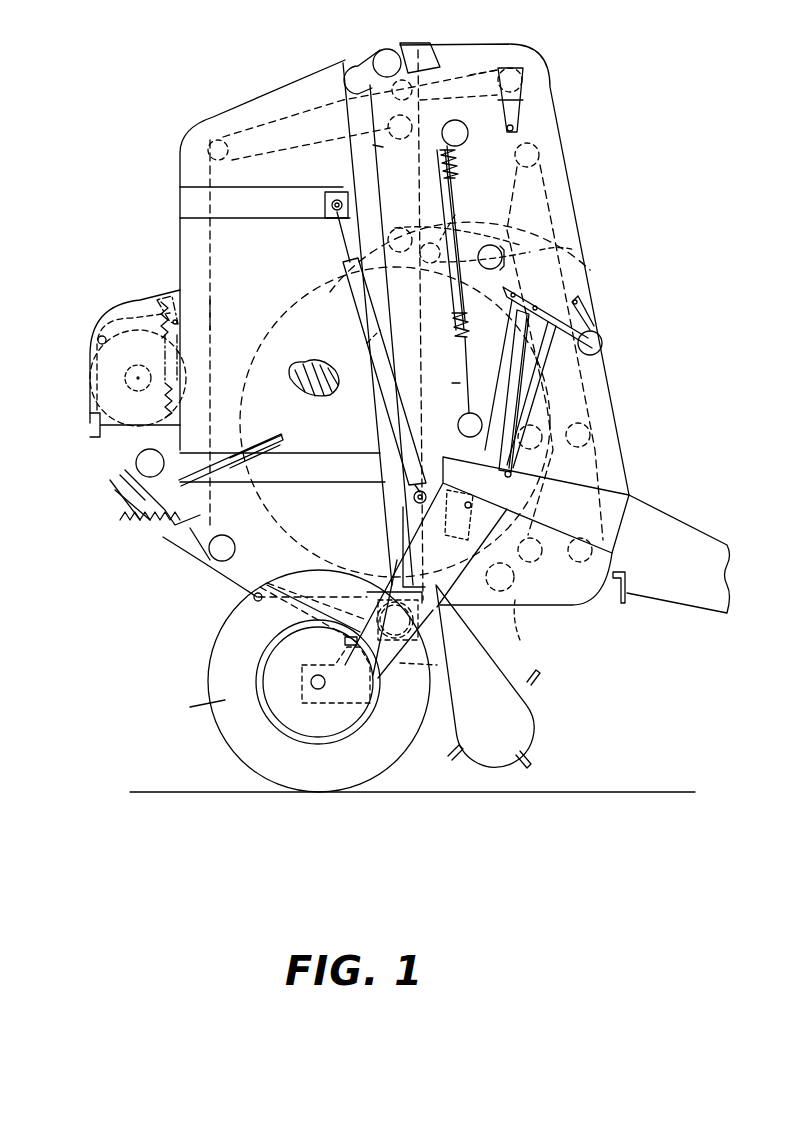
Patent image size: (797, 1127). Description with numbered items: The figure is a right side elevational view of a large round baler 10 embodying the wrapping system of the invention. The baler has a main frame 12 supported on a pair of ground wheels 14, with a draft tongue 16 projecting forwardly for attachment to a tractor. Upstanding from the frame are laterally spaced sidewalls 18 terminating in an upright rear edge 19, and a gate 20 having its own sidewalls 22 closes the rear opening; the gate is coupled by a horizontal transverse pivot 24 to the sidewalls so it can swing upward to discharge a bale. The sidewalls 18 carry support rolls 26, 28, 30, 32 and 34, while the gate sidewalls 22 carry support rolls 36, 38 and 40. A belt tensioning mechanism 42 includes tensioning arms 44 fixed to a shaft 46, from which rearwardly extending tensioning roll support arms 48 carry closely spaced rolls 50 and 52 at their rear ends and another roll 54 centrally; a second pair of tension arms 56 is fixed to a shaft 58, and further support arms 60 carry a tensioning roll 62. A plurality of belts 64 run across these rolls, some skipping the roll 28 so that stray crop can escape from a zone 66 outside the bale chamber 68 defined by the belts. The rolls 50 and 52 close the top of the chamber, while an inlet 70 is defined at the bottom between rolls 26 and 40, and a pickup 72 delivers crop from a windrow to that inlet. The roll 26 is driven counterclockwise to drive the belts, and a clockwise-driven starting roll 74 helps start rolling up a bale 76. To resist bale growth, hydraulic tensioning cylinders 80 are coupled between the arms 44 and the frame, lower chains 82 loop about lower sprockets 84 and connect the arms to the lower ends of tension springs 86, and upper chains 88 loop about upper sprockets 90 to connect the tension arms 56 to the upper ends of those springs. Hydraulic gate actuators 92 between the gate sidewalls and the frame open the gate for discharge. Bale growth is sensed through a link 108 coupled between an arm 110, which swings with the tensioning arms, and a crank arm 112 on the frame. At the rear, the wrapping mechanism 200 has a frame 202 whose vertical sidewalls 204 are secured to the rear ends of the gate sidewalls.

The large round baler 10 is at (591, 641).
The main frame 12 is at (662, 492).
The ground wheels 14 is at (200, 708).
The draft tongue 16 is at (695, 573).
The sidewalls 18 is at (537, 219).
The upright rear edge 19 is at (373, 145).
The gate 20 is at (240, 101).
The gate sidewalls 22 is at (297, 265).
The horizontal transverse pivot 24 is at (385, 49).
The support roll 26 is at (514, 577).
The support roll 28 is at (553, 528).
The support roll 30 is at (554, 421).
The support roll 32 is at (540, 153).
The support roll 34 is at (360, 115).
The support roll 36 is at (230, 158).
The support roll 38 is at (237, 553).
The support roll 40 is at (383, 651).
The belt tensioning mechanism 42 is at (497, 334).
The tensioning arms 44 is at (548, 300).
The shaft 46 is at (604, 347).
The tensioning roll support arms 48 is at (575, 250).
The tensioning roll 50 is at (455, 215).
The tensioning roll 52 is at (372, 182).
The tensioning roll 54 is at (498, 250).
The tension arms 56 is at (522, 112).
The shaft 58 is at (522, 70).
The tensioning roll support arms 60 is at (470, 75).
The tensioning roll 62 is at (421, 55).
The belts 64 is at (214, 313).
The zone 66 is at (570, 560).
The bale chamber 68 is at (372, 300).
The inlet 70 is at (464, 616).
The pickup 72 is at (534, 730).
The starting roll 74 is at (522, 631).
The bale 76 is at (320, 395).
The hydraulic tensioning cylinders 80 is at (512, 388).
The lower chains 82 is at (452, 383).
The lower sprockets 84 is at (458, 418).
The tension springs 86 is at (440, 322).
The upper chains 88 is at (470, 112).
The upper sprockets 90 is at (460, 147).
The hydraulic gate actuators 92 is at (367, 343).
The link 108 is at (542, 360).
The arm 110 is at (592, 318).
The crank arm 112 is at (460, 545).
The wrapping mechanism 200 is at (154, 566).
The frame 202 is at (80, 494).
The vertical sidewalls 204 is at (150, 451).